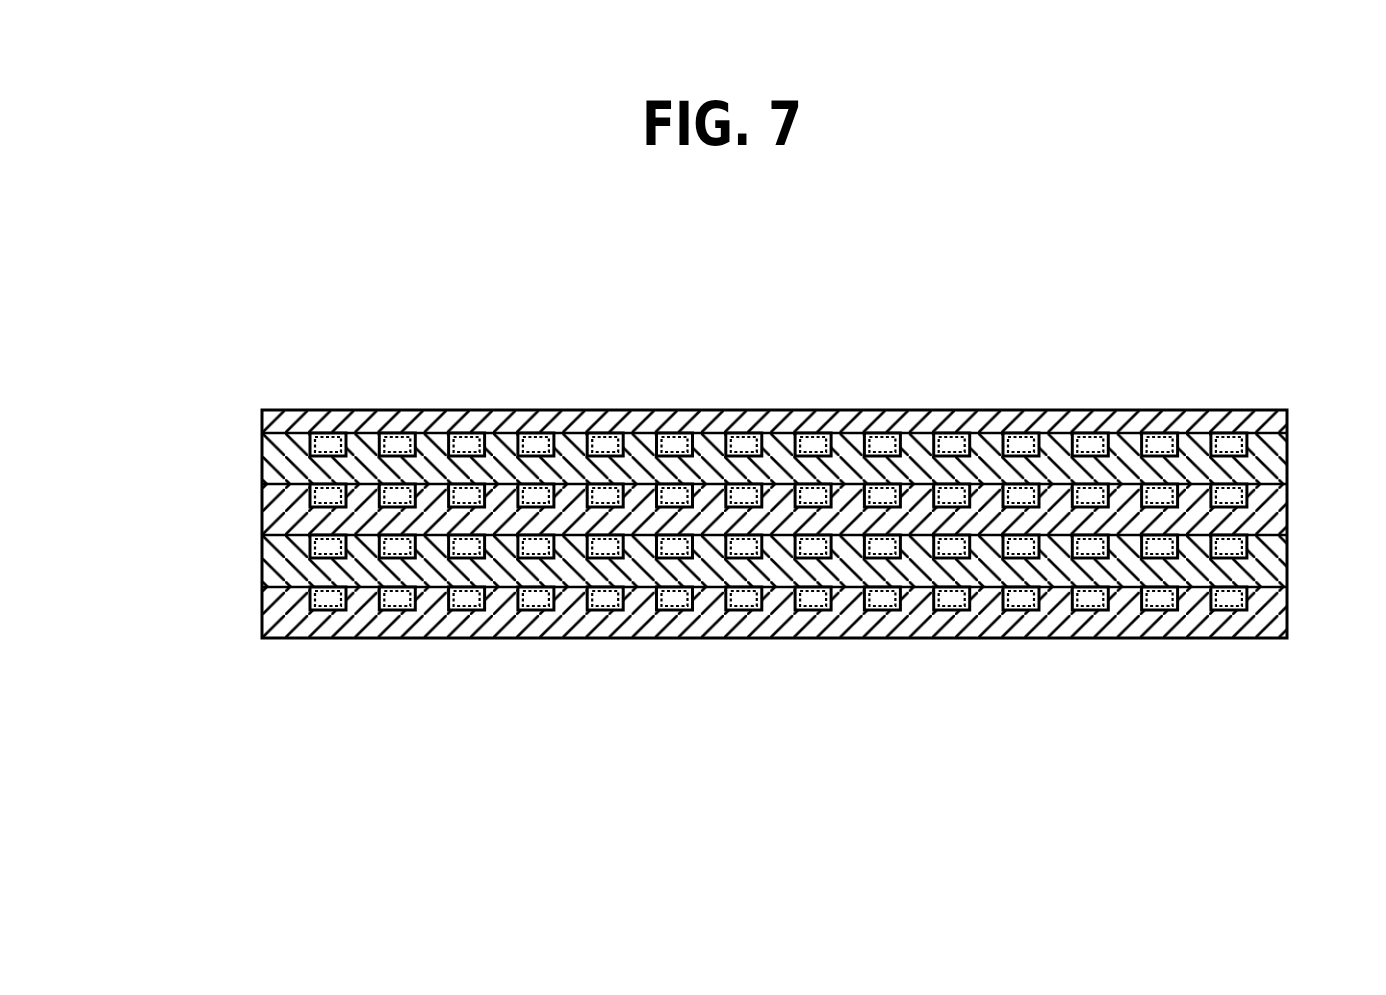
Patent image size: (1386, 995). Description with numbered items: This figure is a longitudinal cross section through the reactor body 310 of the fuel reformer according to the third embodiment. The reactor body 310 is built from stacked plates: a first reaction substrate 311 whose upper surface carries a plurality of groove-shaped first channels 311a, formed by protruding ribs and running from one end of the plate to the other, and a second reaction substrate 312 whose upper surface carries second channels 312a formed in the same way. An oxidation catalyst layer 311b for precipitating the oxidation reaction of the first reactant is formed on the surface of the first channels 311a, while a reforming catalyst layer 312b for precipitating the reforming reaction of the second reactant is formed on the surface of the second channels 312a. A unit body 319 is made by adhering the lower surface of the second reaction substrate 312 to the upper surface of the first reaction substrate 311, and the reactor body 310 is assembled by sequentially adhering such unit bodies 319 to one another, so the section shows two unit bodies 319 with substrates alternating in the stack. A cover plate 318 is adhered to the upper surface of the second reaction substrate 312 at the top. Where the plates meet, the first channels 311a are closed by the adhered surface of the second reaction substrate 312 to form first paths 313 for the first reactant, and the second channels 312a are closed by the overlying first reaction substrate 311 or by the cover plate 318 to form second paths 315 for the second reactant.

The reactor body 310 is at (770, 282).
The first reaction substrate 311 is at (242, 512).
The second reaction substrate 312 is at (242, 455).
The first paths 313 is at (1154, 483).
The second paths 315 is at (1224, 428).
The cover plate 318 is at (1287, 426).
The unit body 319 is at (140, 435).
The first channel 311a is at (598, 618).
The oxidation catalyst layer 311b is at (304, 592).
The second channel 312a is at (533, 597).
The reforming catalyst layer 312b is at (442, 548).